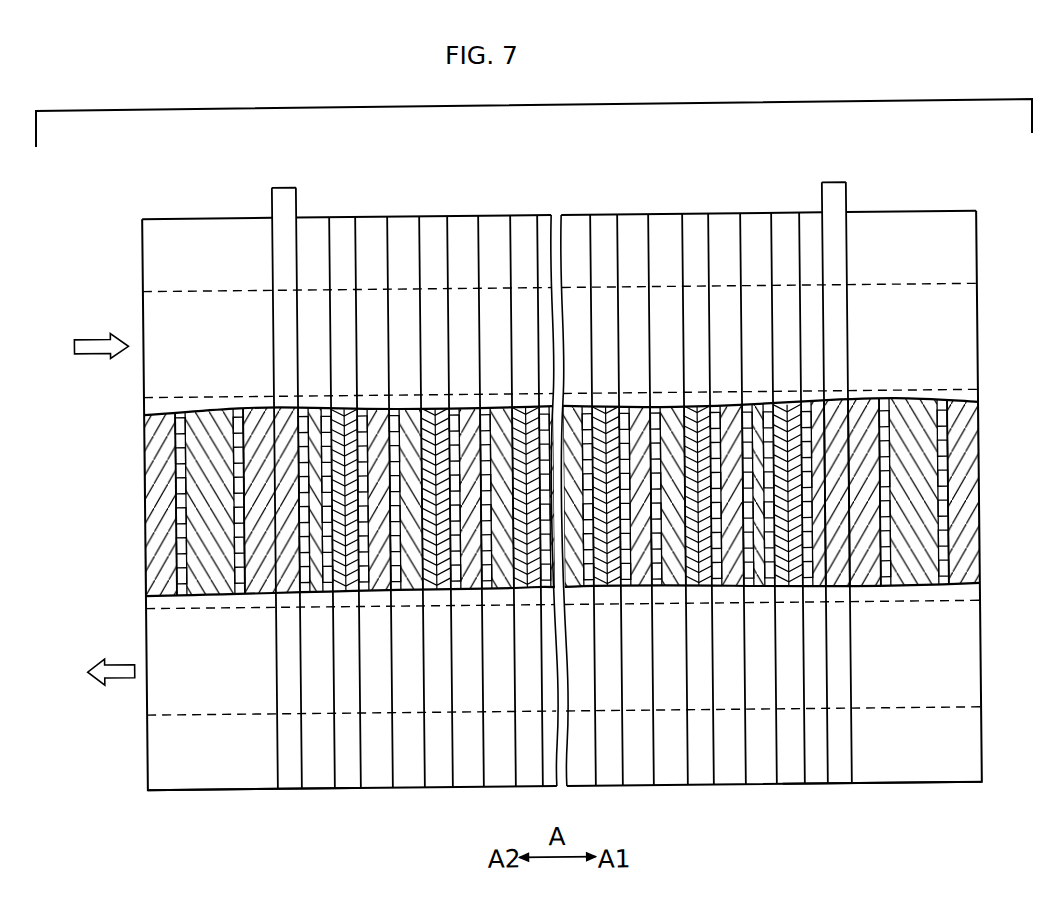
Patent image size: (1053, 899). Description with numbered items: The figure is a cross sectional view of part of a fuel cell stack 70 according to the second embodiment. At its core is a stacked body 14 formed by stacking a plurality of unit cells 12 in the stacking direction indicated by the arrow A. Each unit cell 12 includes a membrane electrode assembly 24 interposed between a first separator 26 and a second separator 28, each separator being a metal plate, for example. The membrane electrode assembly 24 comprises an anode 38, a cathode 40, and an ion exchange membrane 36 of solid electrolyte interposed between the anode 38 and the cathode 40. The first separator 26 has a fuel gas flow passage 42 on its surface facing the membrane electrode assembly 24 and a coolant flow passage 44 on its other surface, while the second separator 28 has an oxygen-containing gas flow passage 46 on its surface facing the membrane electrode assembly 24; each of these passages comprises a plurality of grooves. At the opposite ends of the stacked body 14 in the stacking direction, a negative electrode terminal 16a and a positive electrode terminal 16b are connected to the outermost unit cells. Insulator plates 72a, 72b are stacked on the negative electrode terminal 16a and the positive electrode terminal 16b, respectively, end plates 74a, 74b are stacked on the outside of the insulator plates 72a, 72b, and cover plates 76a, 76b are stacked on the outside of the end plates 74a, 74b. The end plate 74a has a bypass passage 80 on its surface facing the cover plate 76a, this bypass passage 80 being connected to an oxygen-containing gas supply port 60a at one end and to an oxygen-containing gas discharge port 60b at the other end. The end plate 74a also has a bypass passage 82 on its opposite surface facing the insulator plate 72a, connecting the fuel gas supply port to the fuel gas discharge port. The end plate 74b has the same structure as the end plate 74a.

The fuel cell stack 70 is at (510, 153).
The stacked body 14 is at (685, 163).
The unit cell 12 is at (690, 211).
The negative electrode terminal 16a is at (286, 188).
The positive electrode terminal 16b is at (838, 188).
The cover plate 76a is at (166, 226).
The cover plate 76b is at (957, 224).
The insulator plate 72a is at (253, 227).
The insulator plate 72b is at (871, 225).
The oxygen-containing gas supply port 60a is at (154, 292).
The oxygen-containing gas discharge port 60b is at (147, 608).
The bypass passage 80 is at (240, 515).
The bypass passage 82 is at (175, 552).
The cathode 40 is at (793, 420).
The coolant flow passage 44 is at (748, 445).
The oxygen-containing gas flow passage 46 is at (808, 482).
The anode 38 is at (780, 517).
The ion exchange membrane 36 is at (820, 550).
The fuel gas flow passage 42 is at (782, 592).
The end plate 74a is at (214, 797).
The end plate 74b is at (917, 799).
The first separator 26 is at (325, 788).
The membrane electrode assembly 24 is at (349, 788).
The second separator 28 is at (385, 788).